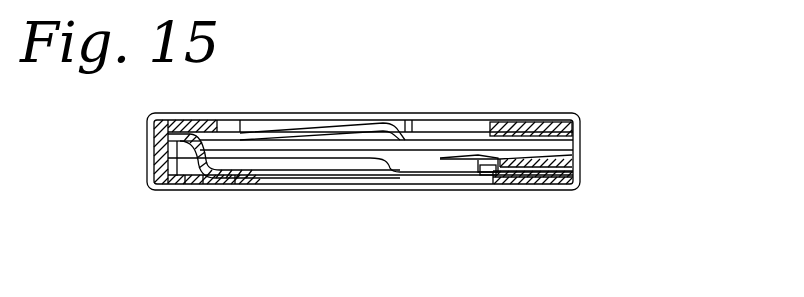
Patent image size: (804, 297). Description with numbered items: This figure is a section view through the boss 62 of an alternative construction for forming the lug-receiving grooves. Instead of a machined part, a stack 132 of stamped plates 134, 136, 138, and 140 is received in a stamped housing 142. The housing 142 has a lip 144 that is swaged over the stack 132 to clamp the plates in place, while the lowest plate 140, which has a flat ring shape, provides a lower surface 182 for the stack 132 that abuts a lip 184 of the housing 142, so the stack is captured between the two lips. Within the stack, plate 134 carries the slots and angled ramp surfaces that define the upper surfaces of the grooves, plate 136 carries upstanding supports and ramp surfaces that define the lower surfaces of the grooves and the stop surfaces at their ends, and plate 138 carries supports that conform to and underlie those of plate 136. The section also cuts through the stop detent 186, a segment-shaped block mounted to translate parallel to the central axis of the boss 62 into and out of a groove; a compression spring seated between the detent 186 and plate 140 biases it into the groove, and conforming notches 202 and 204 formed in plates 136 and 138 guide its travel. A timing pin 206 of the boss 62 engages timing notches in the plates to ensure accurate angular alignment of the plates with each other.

The boss 62 is at (617, 120).
The stack 132 is at (586, 125).
The plate 134 is at (512, 122).
The plate 136 is at (508, 183).
The plate 138 is at (563, 187).
The plate 140 is at (217, 185).
The housing 142 is at (162, 152).
The lip 144 is at (177, 114).
The lower surface 182 is at (197, 185).
The lip 184 is at (170, 191).
The stop detent 186 is at (477, 163).
The notch 202 is at (487, 153).
The notch 204 is at (486, 183).
The timing pin 206 is at (170, 151).